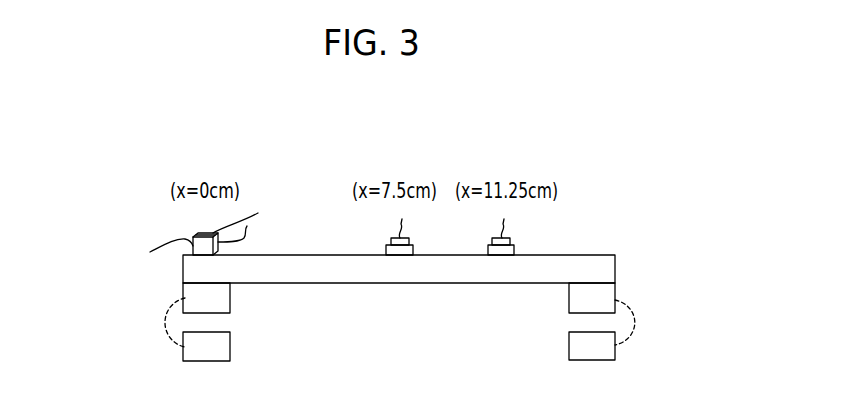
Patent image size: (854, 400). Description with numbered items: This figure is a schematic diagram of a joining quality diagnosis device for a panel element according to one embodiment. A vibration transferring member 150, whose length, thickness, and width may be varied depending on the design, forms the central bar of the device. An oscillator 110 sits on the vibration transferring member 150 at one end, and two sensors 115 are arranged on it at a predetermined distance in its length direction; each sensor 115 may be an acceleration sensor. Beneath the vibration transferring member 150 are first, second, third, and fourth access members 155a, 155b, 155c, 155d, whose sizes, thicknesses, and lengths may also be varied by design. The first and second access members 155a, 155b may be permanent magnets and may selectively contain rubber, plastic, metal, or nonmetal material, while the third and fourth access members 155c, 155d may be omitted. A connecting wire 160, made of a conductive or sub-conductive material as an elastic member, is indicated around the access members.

The oscillator 110 is at (193, 246).
The sensor 115 is at (399, 255).
The vibration transferring member 150 is at (357, 283).
The first access member 155a is at (230, 297).
The second access member 155b is at (606, 292).
The third access member 155c is at (230, 340).
The fourth access member 155d is at (606, 350).
The connecting wire 160 is at (160, 325).